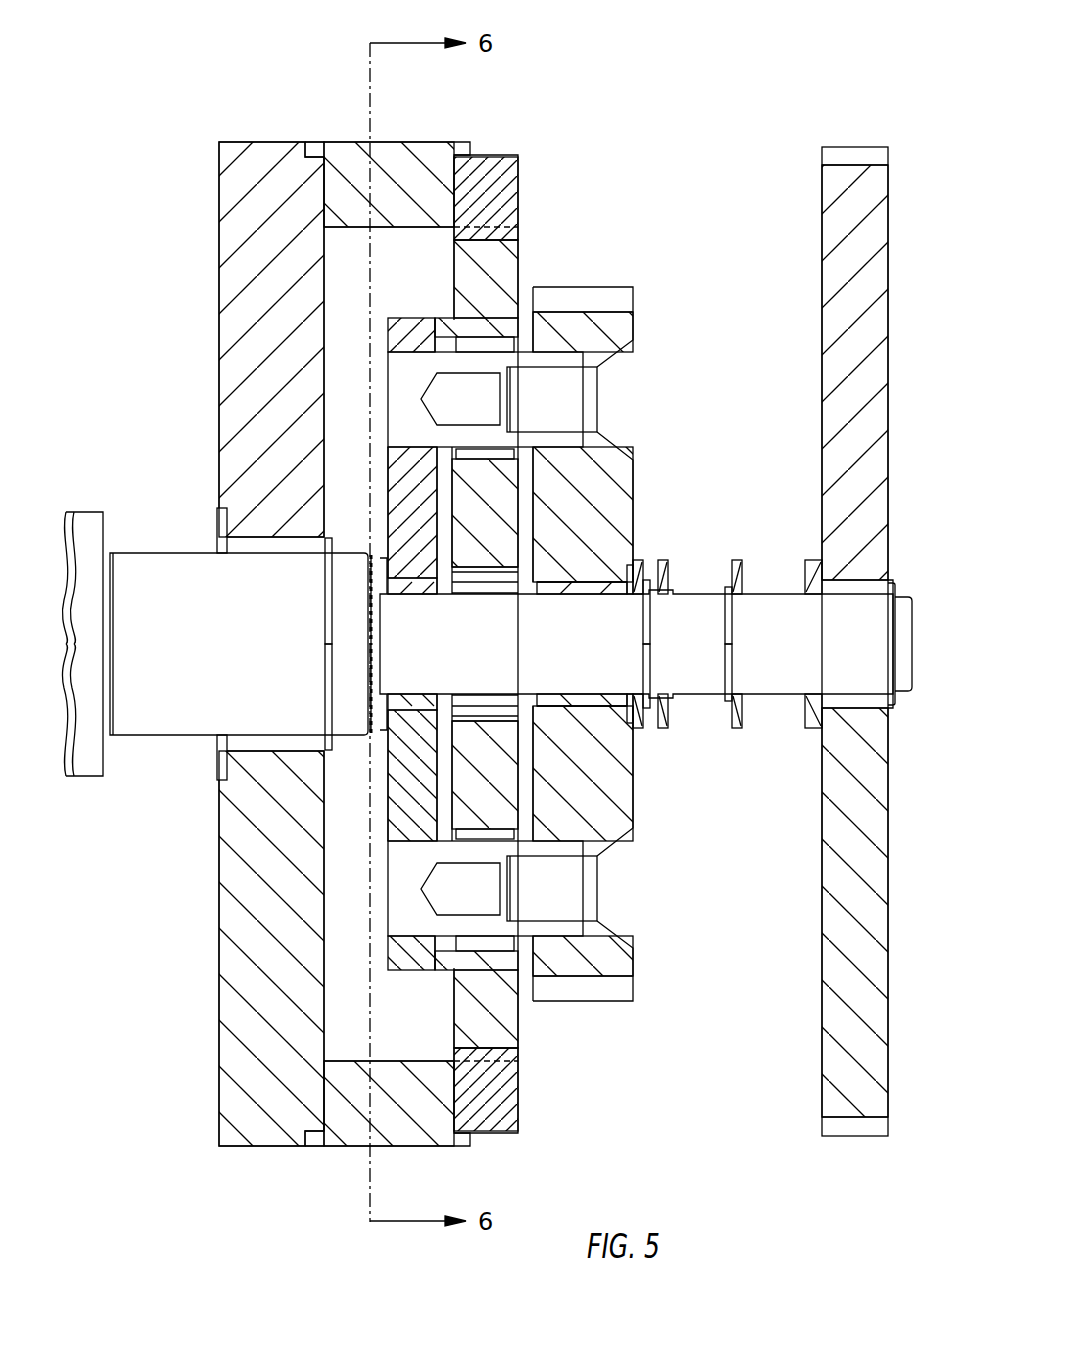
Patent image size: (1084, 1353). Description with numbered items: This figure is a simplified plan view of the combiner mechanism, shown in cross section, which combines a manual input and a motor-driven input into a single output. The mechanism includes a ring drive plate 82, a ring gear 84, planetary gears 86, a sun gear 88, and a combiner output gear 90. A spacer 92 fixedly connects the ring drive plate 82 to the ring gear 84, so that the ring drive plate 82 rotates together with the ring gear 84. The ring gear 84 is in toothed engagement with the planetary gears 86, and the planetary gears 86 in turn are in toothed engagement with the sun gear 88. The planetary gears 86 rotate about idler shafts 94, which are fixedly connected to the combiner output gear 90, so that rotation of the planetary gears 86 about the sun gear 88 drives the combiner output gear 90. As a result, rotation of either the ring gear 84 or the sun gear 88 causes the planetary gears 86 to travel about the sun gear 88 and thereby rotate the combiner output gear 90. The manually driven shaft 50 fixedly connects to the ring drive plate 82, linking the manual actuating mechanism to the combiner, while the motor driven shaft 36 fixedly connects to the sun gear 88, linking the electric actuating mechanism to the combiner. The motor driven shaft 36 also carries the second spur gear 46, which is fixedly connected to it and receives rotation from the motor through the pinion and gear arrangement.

The motor driven shaft 36 is at (703, 592).
The second spur gear 46 is at (889, 825).
The manually driven shaft 50 is at (188, 552).
The ring drive plate 82 is at (218, 340).
The ring gear 84 is at (503, 157).
The planetary gears 86 is at (455, 277).
The sun gear 88 is at (470, 718).
The combiner output gear 90 is at (590, 1002).
The spacer 92 is at (323, 1147).
The idler shafts 94 is at (387, 388).